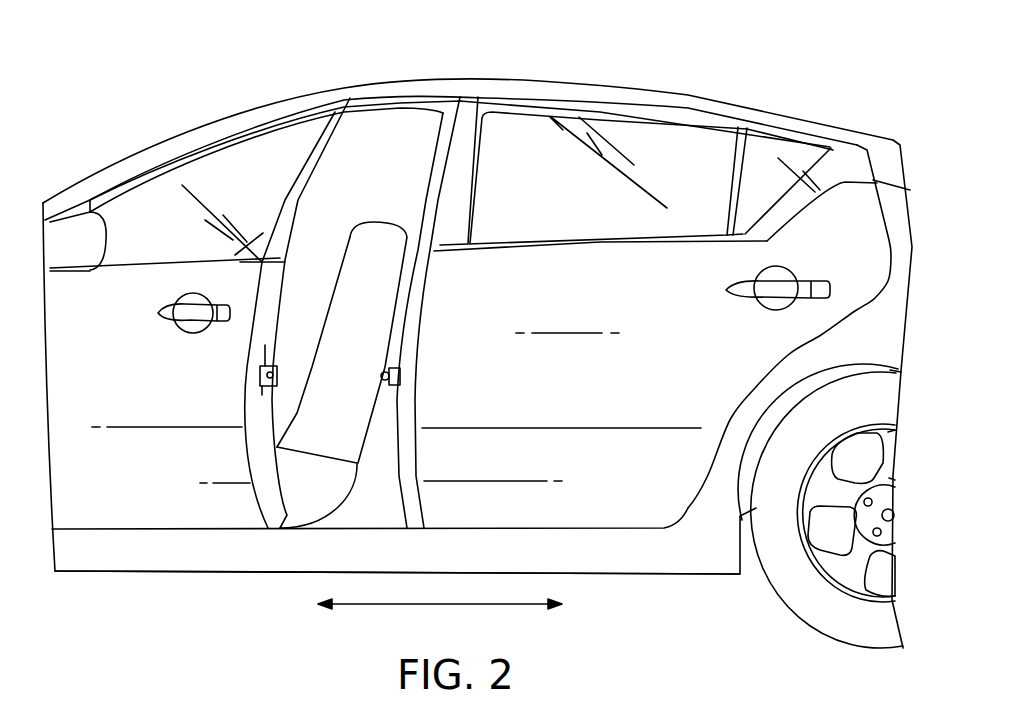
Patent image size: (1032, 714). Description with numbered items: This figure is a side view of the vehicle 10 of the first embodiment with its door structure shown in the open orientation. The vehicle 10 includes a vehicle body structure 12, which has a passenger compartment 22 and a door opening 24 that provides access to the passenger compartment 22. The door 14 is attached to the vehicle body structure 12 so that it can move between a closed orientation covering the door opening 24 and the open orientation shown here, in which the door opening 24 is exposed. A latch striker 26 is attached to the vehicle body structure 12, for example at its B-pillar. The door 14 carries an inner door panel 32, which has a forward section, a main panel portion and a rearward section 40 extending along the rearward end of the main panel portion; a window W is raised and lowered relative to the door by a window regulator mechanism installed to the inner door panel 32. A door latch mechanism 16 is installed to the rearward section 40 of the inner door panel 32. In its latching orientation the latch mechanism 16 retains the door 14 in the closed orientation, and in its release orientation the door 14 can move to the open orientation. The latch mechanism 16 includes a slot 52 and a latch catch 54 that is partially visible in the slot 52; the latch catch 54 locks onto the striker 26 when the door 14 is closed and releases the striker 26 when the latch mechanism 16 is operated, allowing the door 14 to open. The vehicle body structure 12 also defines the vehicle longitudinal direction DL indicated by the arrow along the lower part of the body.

The vehicle 10 is at (712, 63).
The vehicle body structure 12 is at (278, 97).
The door 14 is at (130, 487).
The door latch mechanism 16 is at (266, 345).
The passenger compartment 22 is at (392, 143).
The door opening 24 is at (443, 193).
The latch striker 26 is at (397, 386).
The inner door panel 32 is at (277, 417).
The rearward section 40 is at (273, 295).
The slot 52 is at (195, 316).
The latch catch 54 is at (270, 386).
The window W is at (152, 213).
The vehicle longitudinal direction DL is at (477, 607).